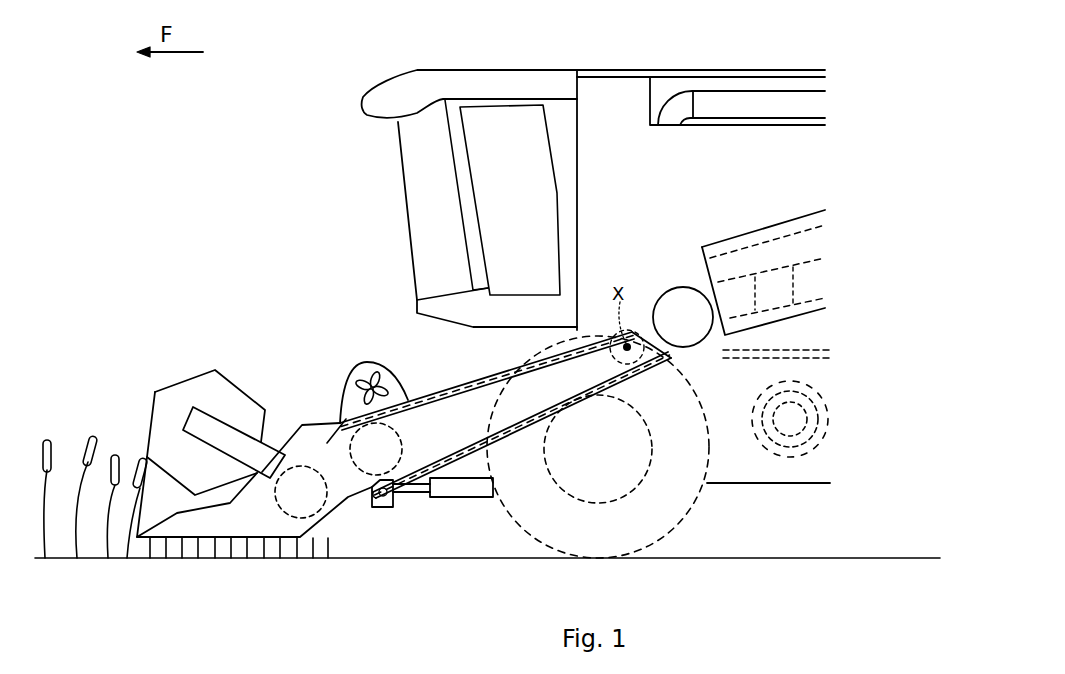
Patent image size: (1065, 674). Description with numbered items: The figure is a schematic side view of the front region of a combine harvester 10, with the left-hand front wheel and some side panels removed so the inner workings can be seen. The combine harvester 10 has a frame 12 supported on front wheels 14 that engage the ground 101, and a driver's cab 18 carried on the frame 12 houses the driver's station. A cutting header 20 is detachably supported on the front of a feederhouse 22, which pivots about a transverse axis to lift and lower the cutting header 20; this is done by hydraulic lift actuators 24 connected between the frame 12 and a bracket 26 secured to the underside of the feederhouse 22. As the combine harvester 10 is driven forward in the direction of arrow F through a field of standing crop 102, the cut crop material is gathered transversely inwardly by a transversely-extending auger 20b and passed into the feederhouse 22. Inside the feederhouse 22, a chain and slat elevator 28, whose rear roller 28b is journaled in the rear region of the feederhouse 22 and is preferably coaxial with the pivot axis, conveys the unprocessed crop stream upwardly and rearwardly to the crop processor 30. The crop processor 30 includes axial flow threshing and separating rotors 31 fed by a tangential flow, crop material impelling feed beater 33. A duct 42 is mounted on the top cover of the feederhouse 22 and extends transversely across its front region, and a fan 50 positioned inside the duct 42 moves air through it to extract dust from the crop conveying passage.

The combine harvester 10 is at (317, 103).
The frame 12 is at (782, 484).
The front wheels 14 is at (688, 512).
The driver's cab 18 is at (407, 210).
The cutting header 20 is at (160, 368).
The auger 20b is at (283, 518).
The feederhouse 22 is at (432, 390).
The hydraulic lift actuators 24 is at (458, 497).
The bracket 26 is at (384, 508).
The elevator 28 is at (496, 372).
The rear roller 28b is at (640, 330).
The crop processor 30 is at (695, 232).
The axial flow threshing and separating rotors 31 is at (765, 225).
The feed beater 33 is at (698, 288).
The duct 42 is at (351, 364).
The fan 50 is at (382, 361).
The ground 101 is at (137, 558).
The standing crop 102 is at (78, 477).